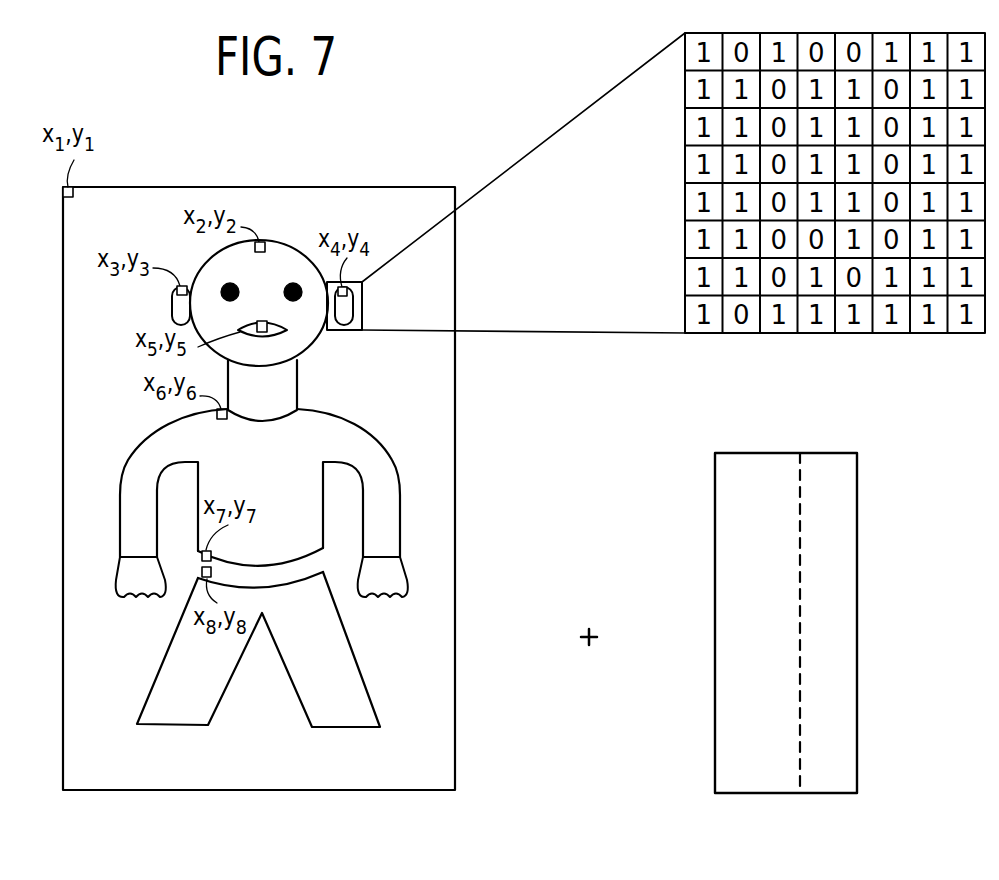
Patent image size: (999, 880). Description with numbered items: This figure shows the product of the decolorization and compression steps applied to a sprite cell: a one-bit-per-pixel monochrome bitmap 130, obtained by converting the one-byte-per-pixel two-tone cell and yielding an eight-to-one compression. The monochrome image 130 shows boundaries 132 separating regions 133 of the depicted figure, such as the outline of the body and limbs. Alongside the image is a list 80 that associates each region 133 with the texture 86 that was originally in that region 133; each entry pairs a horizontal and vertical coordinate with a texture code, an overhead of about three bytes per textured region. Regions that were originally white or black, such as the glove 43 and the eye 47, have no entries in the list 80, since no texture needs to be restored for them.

The monochrome bitmap 130 is at (264, 187).
The eye 47 is at (296, 285).
The boundaries 132 is at (352, 415).
The regions 133 is at (377, 436).
The glove 43 is at (404, 581).
The list 80 is at (825, 453).
The texture 86 is at (818, 795).